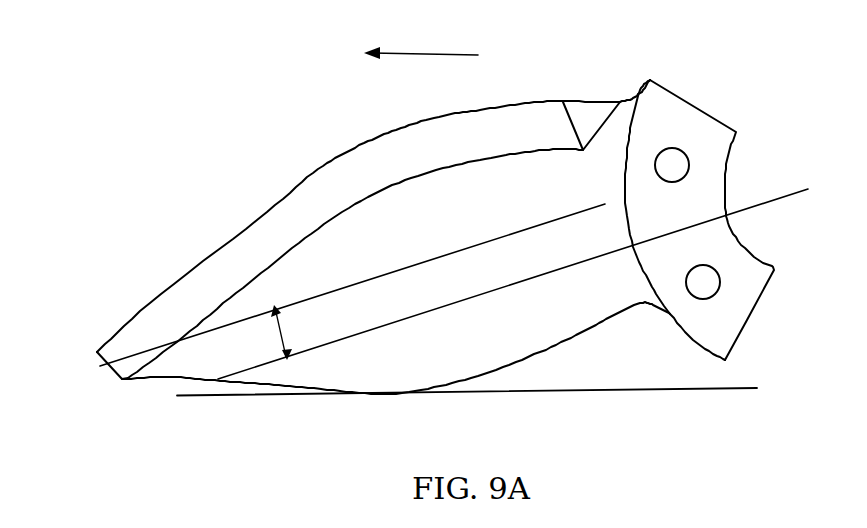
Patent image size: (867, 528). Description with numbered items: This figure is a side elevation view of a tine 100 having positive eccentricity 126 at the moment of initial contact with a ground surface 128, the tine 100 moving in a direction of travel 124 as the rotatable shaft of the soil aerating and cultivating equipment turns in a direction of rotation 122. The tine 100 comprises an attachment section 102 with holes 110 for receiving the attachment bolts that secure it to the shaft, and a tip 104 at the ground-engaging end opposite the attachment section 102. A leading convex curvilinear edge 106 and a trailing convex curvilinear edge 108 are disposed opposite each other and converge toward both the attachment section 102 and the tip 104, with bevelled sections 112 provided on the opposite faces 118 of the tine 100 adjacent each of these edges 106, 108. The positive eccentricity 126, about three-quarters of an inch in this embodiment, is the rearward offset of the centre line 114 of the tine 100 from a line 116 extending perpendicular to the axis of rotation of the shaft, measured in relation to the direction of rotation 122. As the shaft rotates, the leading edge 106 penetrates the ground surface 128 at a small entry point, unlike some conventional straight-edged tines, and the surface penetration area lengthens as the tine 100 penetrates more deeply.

The tine 100 is at (216, 169).
The attachment section 102 is at (738, 320).
The tip 104 is at (97, 350).
The leading convex curvilinear edge 106 is at (558, 342).
The trailing convex curvilinear edge 108 is at (316, 172).
The holes 110 is at (676, 157).
The bevelled sections 112 is at (477, 135).
The centre line 114 is at (511, 232).
The line perpendicular to the axis of rotation 116 is at (400, 322).
The faces 118 is at (397, 240).
The direction of rotation 122 is at (785, 217).
The direction of travel 124 is at (421, 38).
The positive eccentricity 126 is at (290, 327).
The ground surface 128 is at (752, 389).